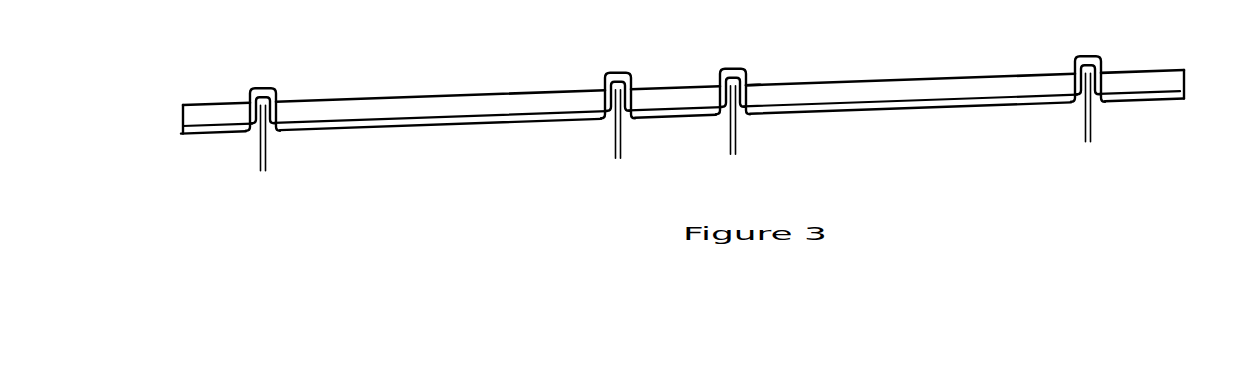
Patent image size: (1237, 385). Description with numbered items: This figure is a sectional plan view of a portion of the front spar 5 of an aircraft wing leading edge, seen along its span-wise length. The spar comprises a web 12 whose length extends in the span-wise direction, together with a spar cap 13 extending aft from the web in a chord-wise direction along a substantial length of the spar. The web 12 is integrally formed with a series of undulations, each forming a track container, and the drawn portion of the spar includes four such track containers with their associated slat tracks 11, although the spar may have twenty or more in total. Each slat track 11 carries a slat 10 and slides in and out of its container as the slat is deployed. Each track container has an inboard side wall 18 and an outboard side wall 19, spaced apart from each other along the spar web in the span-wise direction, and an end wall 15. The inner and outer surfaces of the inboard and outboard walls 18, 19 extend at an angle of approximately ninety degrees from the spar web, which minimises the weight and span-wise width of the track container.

The front spar 5 is at (878, 133).
The slat 10 is at (136, 8).
The slat track 11 is at (264, 146).
The web 12 is at (417, 120).
The spar cap 13 is at (493, 103).
The end wall 15 is at (270, 88).
The inboard side wall 18 is at (713, 83).
The outboard side wall 19 is at (752, 87).